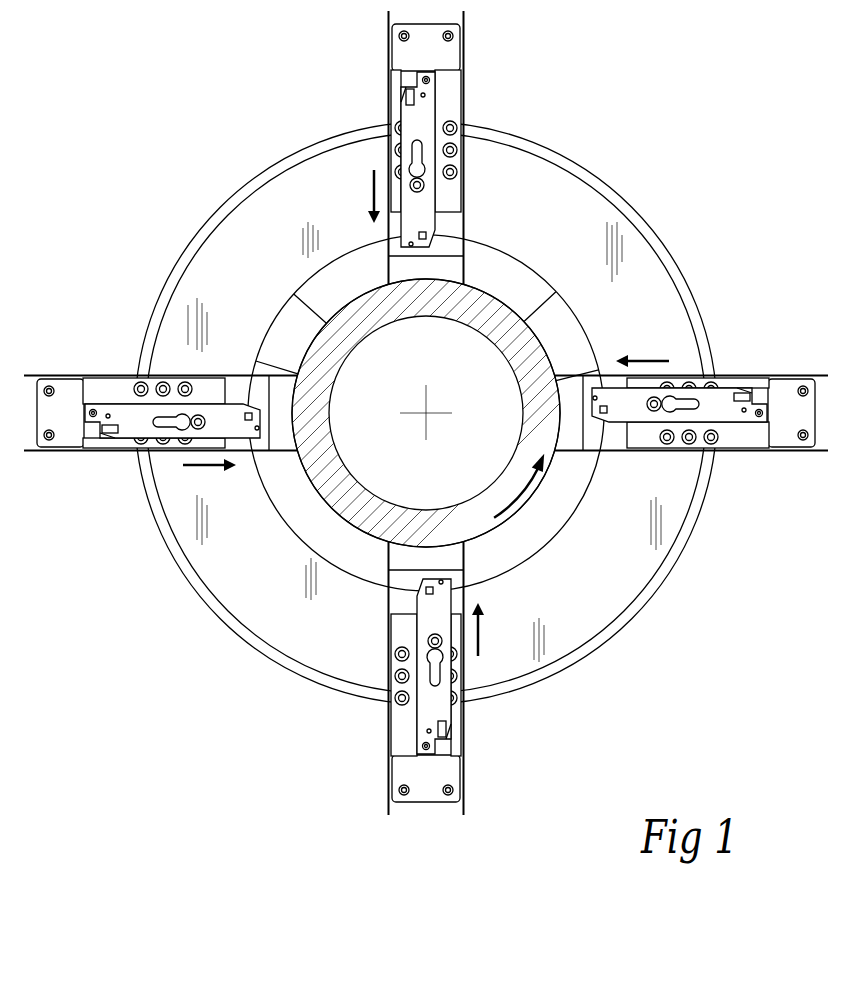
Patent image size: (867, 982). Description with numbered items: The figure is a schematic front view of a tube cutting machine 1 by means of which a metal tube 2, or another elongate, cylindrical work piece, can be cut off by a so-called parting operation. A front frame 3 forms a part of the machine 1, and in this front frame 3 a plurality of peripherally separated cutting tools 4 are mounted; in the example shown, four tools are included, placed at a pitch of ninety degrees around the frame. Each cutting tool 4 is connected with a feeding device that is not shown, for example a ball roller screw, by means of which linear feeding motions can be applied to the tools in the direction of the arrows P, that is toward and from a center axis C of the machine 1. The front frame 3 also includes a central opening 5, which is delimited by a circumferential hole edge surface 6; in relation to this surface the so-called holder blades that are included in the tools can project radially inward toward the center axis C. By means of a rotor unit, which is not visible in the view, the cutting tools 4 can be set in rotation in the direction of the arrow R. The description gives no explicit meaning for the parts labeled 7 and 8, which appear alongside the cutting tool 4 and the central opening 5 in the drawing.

The machine 1 is at (634, 177).
The metal tube 2 is at (297, 479).
The front frame 3 is at (208, 608).
The cutting tool 4 is at (753, 450).
The central opening 5 is at (362, 556).
The circumferential hole edge surface 6 is at (575, 492).
The slide 7 is at (623, 408).
The ring segment 8 is at (542, 312).
The center axis C is at (433, 412).
The arrow R is at (520, 490).
The arrows P is at (426, 410).